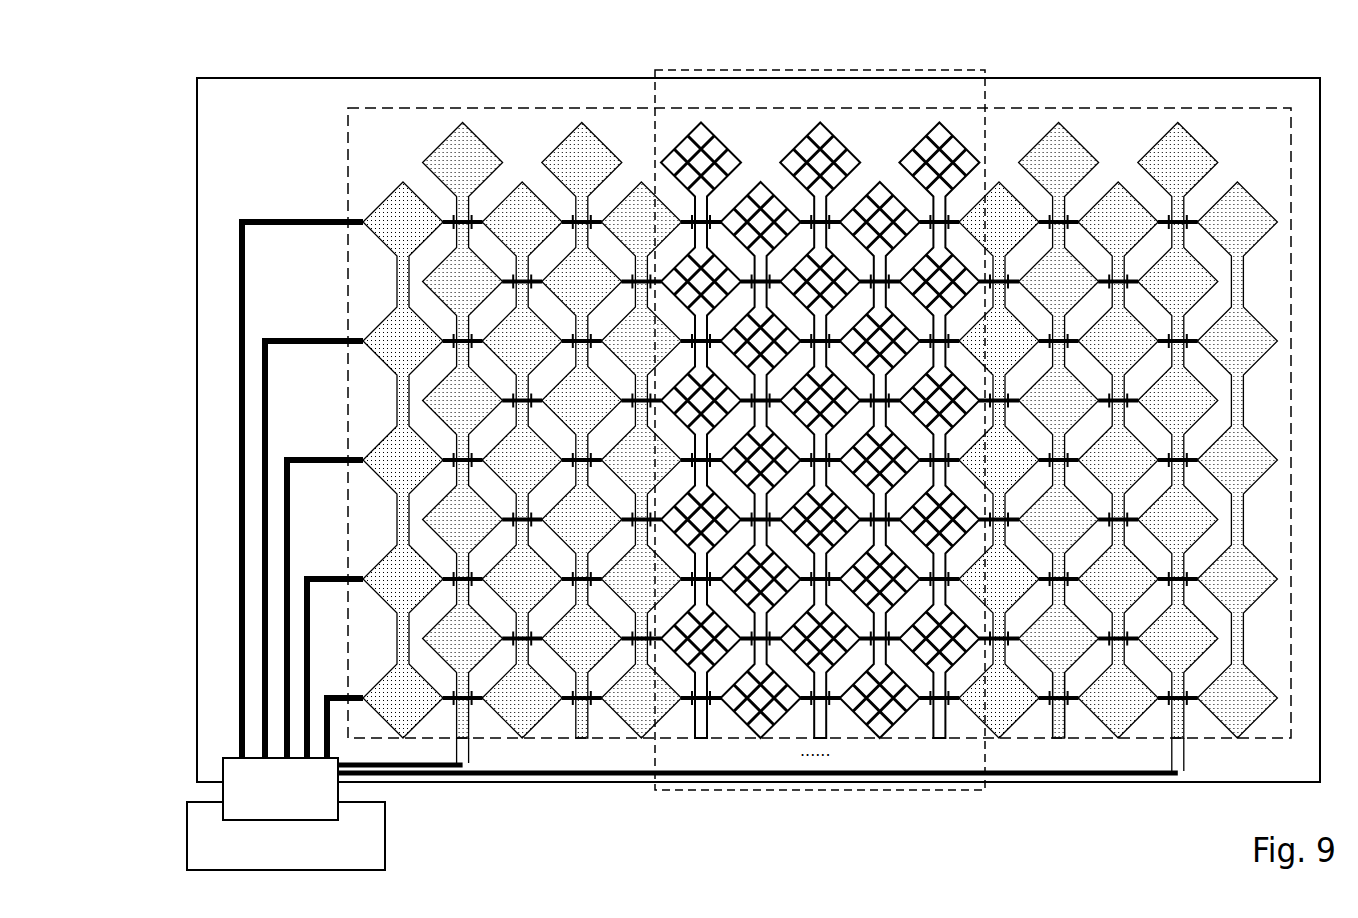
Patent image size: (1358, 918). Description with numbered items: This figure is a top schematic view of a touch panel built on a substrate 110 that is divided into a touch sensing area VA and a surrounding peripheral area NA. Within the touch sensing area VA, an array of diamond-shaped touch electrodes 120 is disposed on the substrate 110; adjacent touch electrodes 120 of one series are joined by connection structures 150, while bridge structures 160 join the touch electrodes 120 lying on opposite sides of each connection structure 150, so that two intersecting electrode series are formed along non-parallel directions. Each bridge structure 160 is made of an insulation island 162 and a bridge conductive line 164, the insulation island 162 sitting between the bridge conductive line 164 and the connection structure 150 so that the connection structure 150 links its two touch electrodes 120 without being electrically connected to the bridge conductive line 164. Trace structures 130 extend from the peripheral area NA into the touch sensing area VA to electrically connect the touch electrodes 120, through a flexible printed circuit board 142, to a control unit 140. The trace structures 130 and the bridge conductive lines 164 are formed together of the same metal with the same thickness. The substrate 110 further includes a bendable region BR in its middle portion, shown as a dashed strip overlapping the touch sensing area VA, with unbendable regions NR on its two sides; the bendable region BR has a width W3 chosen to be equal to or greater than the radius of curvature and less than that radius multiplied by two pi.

The substrate 110 is at (197, 148).
The touch electrode 120 is at (583, 133).
The trace structure 130 is at (239, 366).
The control unit 140 is at (187, 836).
The flexible printed circuit board 142 is at (223, 795).
The connection structure 150 is at (590, 202).
The bridge structure 160 is at (1059, 772).
The insulation island 162 is at (1065, 701).
The bridge conductive line 164 is at (1043, 701).
The peripheral area NA is at (275, 100).
The unbendable region NR is at (389, 92).
The touch sensing area VA is at (456, 105).
The bendable region BR is at (987, 71).
The width of the bendable region W3 is at (656, 52).